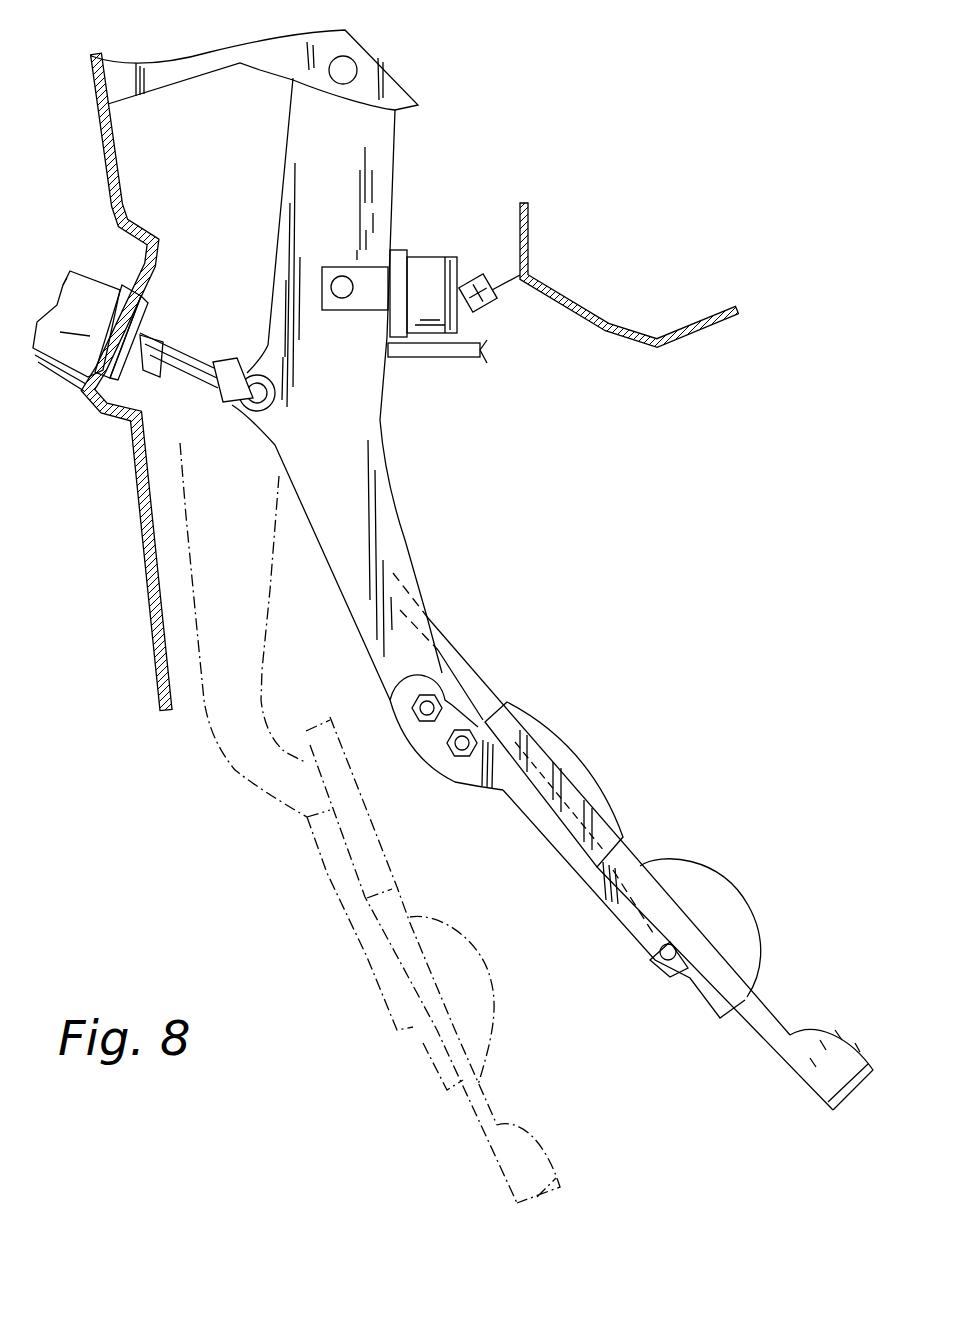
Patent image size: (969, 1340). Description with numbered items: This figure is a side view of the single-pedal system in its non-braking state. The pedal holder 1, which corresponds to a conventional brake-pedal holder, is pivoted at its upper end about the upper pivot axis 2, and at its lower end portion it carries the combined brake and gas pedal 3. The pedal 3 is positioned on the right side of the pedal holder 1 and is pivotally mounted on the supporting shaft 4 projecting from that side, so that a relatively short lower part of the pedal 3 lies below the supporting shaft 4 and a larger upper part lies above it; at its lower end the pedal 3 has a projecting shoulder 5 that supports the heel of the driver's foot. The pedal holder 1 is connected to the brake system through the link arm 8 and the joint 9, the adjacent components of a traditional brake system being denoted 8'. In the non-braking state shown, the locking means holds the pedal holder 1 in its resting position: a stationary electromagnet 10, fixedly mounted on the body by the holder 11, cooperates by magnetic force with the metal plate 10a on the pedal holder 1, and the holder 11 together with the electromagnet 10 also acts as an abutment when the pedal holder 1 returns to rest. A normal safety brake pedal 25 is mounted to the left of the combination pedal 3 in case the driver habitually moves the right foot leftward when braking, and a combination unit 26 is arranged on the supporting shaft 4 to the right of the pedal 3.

The pedal holder 1 is at (407, 530).
The upper pivot axis 2 is at (350, 62).
The combined brake and gas pedal 3 is at (450, 653).
The supporting shaft 4 is at (655, 958).
The projecting shoulder 5 is at (830, 1040).
The link arm 8 is at (156, 364).
The components of a traditional brake system 8' is at (102, 381).
The joint 9 is at (258, 402).
The electromagnet 10 is at (438, 262).
The metal plate 10a is at (396, 250).
The holder 11 is at (513, 290).
The brake pedal 25 is at (540, 723).
The combination unit 26 is at (713, 870).